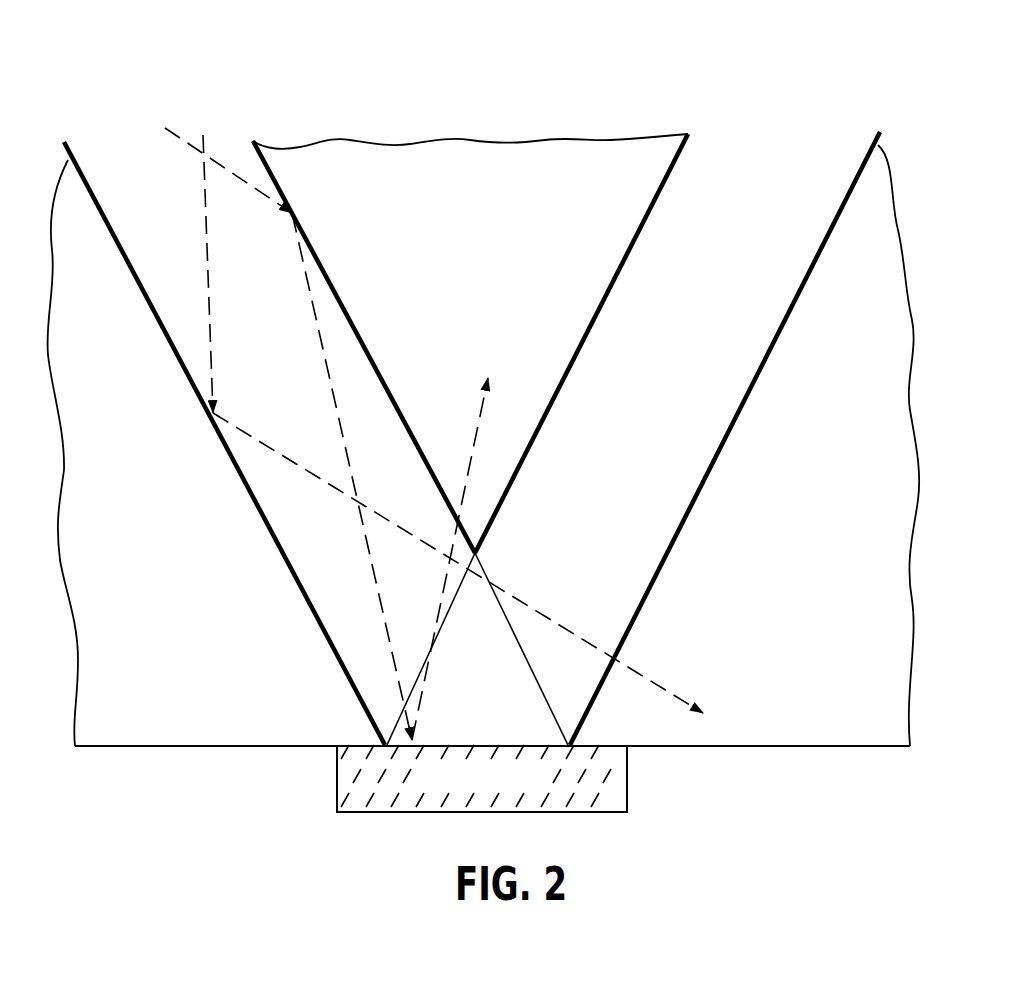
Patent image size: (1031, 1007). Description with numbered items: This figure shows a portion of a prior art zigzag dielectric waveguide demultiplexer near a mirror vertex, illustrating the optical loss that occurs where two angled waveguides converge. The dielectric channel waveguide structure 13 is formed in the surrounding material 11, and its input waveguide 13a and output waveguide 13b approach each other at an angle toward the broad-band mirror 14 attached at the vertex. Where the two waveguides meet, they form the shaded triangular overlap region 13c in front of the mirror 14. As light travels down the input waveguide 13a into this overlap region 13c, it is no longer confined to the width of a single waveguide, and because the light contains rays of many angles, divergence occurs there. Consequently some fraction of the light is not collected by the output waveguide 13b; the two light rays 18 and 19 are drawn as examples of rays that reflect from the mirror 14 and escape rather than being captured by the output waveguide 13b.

The substrate 11 is at (862, 424).
The dielectric channel waveguide structure 13 is at (800, 293).
The input waveguide 13a is at (124, 166).
The output waveguide 13b is at (753, 158).
The overlap region 13c is at (523, 634).
The mirror 14 is at (585, 813).
The light ray 18 is at (470, 455).
The light ray 19 is at (476, 572).